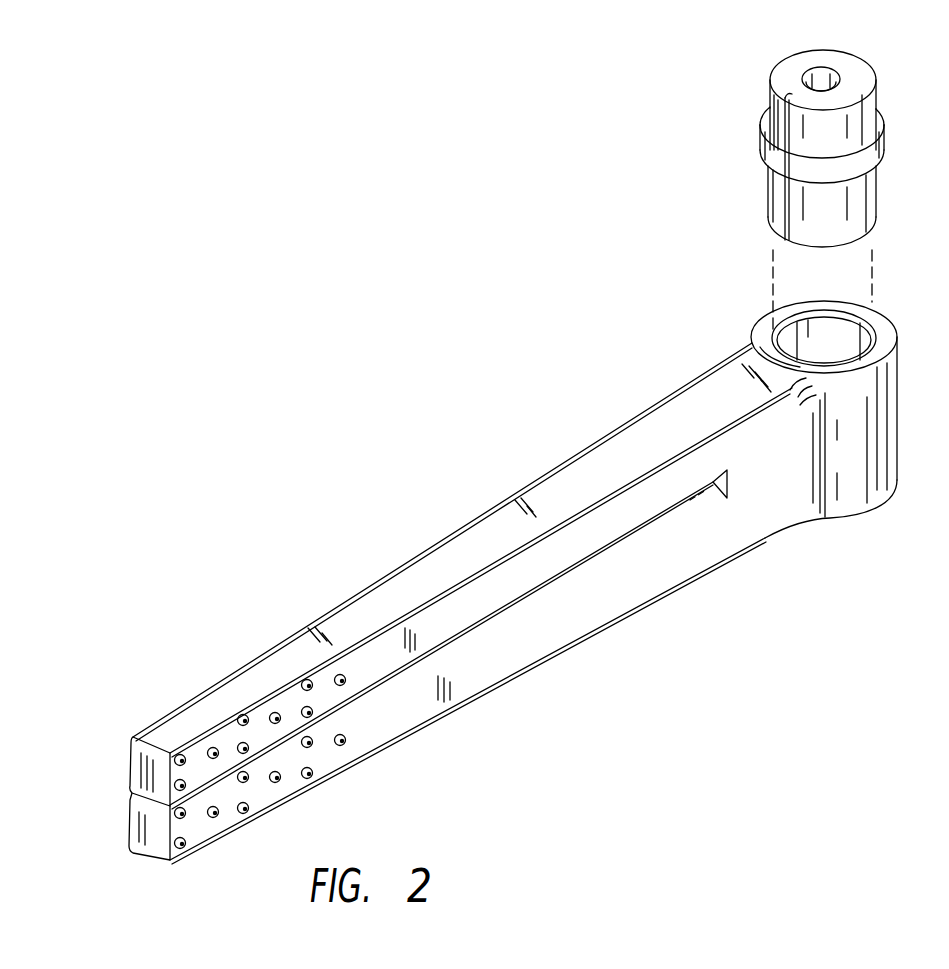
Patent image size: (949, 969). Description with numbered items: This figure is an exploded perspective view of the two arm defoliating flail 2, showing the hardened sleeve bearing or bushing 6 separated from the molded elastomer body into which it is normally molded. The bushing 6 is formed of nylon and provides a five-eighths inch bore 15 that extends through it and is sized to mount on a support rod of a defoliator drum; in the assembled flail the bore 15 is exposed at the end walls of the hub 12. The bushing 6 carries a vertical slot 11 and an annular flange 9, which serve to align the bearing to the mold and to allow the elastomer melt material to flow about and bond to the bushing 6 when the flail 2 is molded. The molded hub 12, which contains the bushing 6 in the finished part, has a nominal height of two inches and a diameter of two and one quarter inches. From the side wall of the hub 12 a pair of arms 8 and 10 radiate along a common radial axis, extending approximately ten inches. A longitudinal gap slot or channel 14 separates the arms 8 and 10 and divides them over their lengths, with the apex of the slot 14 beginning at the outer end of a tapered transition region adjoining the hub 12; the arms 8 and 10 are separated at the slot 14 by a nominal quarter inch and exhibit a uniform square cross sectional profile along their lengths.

The multi-arm elastomer flail 2 is at (539, 582).
The bushing 6 is at (815, 172).
The arm 8 is at (262, 654).
The annular flange 9 is at (884, 146).
The arm 10 is at (397, 736).
The vertical slot 11 is at (790, 113).
The molded hub 12 is at (898, 400).
The longitudinal gap slot 14 is at (495, 618).
The bore 15 is at (822, 72).